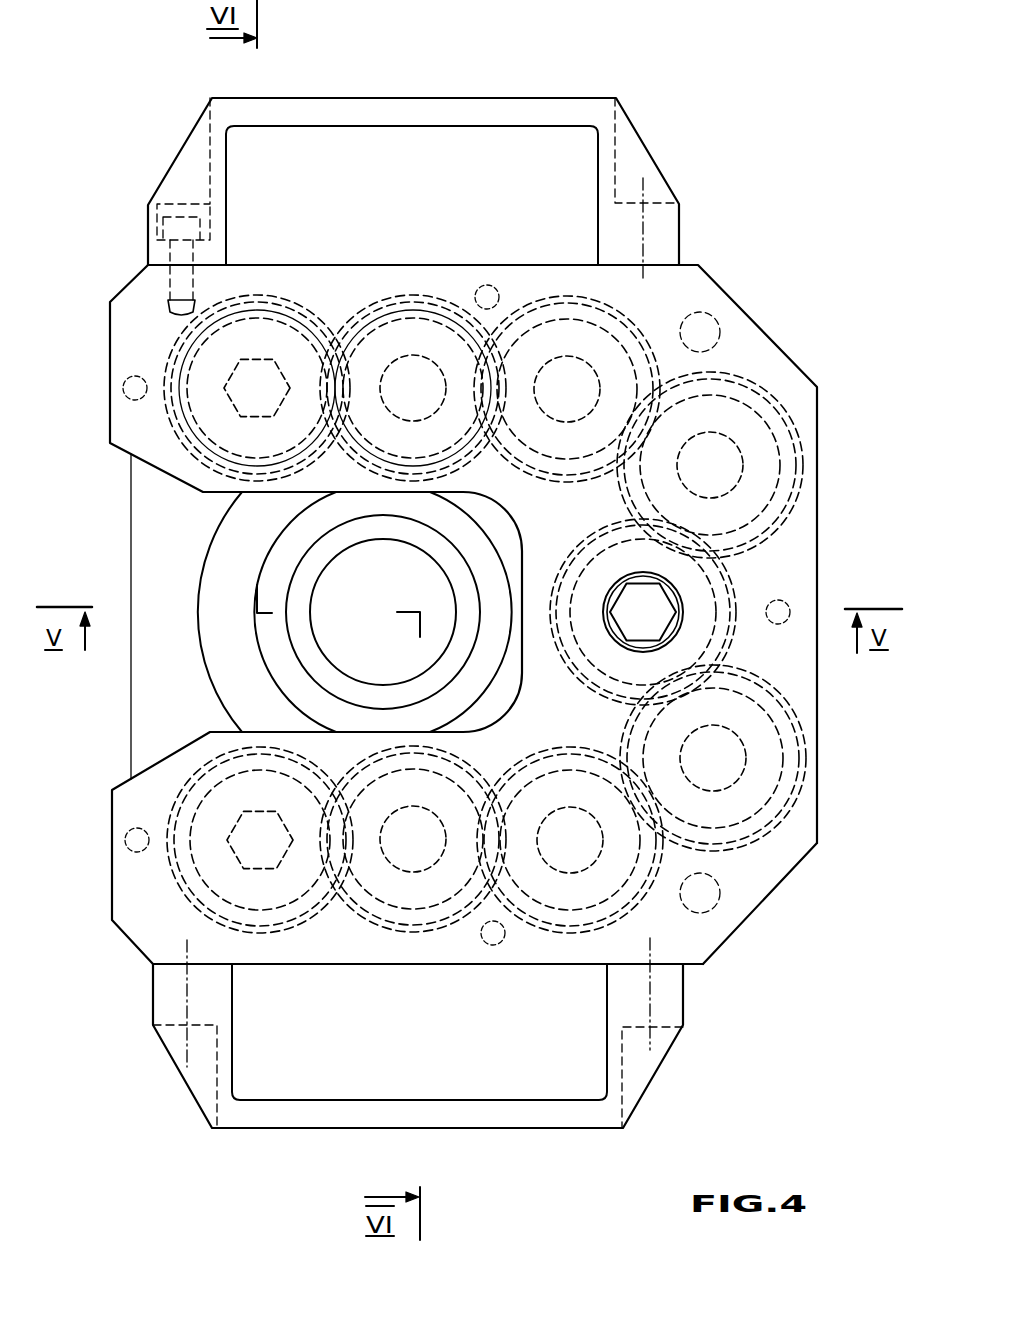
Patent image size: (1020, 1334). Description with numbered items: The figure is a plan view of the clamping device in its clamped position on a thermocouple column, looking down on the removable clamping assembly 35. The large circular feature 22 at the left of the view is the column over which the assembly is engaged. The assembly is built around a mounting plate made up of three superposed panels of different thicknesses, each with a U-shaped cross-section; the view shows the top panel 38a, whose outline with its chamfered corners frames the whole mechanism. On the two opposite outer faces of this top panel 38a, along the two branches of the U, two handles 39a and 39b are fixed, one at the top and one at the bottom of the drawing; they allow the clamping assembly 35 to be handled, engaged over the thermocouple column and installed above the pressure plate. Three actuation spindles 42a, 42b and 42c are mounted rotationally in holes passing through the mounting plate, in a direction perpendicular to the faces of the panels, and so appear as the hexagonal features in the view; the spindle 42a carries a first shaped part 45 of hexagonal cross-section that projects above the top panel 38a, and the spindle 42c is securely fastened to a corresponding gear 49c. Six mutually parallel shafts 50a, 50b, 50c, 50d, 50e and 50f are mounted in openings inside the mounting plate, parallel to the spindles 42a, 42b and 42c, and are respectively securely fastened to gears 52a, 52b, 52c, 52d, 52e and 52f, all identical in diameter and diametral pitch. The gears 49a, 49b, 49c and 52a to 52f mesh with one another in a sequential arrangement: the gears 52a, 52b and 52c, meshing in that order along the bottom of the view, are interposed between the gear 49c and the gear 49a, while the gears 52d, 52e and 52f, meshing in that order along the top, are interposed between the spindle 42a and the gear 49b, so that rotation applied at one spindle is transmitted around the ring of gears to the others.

The main bore 22 is at (363, 603).
The clamping assembly 35 is at (727, 273).
The top panel 38a is at (757, 892).
The handle 39a is at (484, 112).
The handle 39b is at (528, 1115).
The actuation spindle 42a is at (690, 598).
The actuation spindle 42b is at (257, 348).
The actuation spindle 42c is at (232, 869).
The first shaped part 45 is at (627, 600).
The gear 49a is at (720, 602).
The gear 49b is at (293, 323).
The gear 49c is at (195, 790).
The shaft 50a is at (425, 845).
The shaft 50b is at (572, 842).
The shaft 50c is at (733, 773).
The shaft 50d is at (733, 457).
The shaft 50e is at (580, 370).
The shaft 50f is at (415, 360).
The gear 52a is at (368, 912).
The gear 52b is at (557, 917).
The gear 52c is at (795, 730).
The gear 52d is at (740, 378).
The gear 52e is at (537, 310).
The gear 52f is at (395, 302).